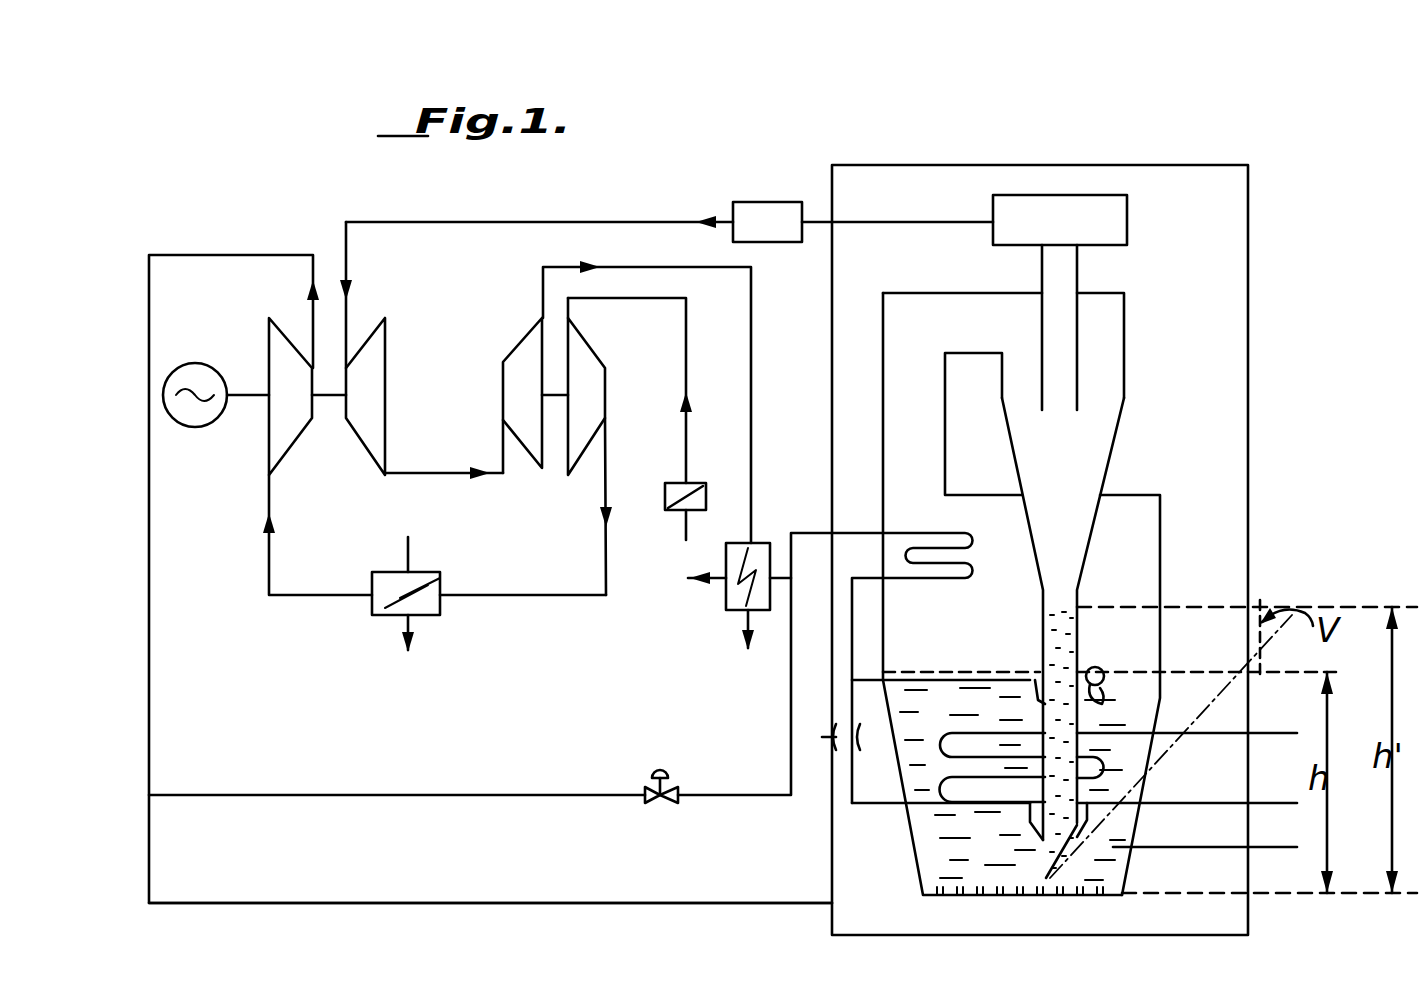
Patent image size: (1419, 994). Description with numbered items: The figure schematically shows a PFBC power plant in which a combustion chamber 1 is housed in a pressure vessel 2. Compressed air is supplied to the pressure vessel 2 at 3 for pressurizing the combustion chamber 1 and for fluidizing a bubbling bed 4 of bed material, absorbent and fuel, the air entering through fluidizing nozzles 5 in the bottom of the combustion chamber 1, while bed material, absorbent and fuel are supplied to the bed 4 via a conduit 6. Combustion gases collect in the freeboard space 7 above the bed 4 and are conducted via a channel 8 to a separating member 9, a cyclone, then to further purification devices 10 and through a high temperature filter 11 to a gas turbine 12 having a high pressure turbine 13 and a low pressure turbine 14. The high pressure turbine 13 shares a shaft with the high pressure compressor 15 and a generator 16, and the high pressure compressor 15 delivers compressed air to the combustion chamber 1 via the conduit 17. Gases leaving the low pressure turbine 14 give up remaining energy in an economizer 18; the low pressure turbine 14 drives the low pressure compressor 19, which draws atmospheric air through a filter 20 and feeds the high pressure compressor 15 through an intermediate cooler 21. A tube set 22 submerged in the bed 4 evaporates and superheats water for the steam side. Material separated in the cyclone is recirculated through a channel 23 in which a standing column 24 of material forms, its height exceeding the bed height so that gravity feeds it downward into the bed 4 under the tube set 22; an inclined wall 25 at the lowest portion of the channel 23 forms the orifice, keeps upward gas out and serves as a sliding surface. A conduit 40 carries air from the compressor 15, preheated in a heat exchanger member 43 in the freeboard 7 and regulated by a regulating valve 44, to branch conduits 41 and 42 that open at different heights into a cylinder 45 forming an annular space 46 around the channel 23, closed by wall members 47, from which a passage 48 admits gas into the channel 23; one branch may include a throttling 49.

The combustion chamber 1 is at (1128, 495).
The pressure vessel 2 is at (1248, 345).
The air supply point 3 is at (830, 903).
The bed 4 is at (935, 850).
The fluidizing nozzles 5 is at (1065, 897).
The conduit 6 is at (1262, 847).
The space (freeboard) 7 is at (1012, 565).
The channel 8 is at (924, 373).
The separating member 9 is at (1074, 495).
The further purification devices 10 is at (1192, 223).
The high temperature filter 11 is at (798, 182).
The gas turbine 12 is at (488, 348).
The high pressure turbine 13 is at (358, 468).
The low pressure turbine 14 is at (503, 415).
The high pressure compressor 15 is at (296, 470).
The generator 16 is at (203, 427).
The conduit 17 is at (282, 236).
The economizer 18 is at (730, 608).
The low pressure compressor 19 is at (590, 462).
The filter 20 is at (680, 508).
The intermediate cooler 21 is at (436, 594).
The tube set 22 is at (1282, 733).
The channel 23 is at (1085, 626).
The column of material 24 is at (1085, 656).
The inclined wall 25 is at (1078, 853).
The conduit 40 is at (482, 780).
The branch conduit 41 is at (1097, 660).
The branch conduit 42 is at (904, 795).
The heat exchanger member 43 is at (950, 517).
The regulating valve 44 is at (734, 772).
The cylinder 45 is at (1032, 686).
The annular space 46 is at (1040, 680).
The wall members 47 is at (1111, 686).
The passage 48 is at (1035, 690).
The throttling 49 is at (826, 730).